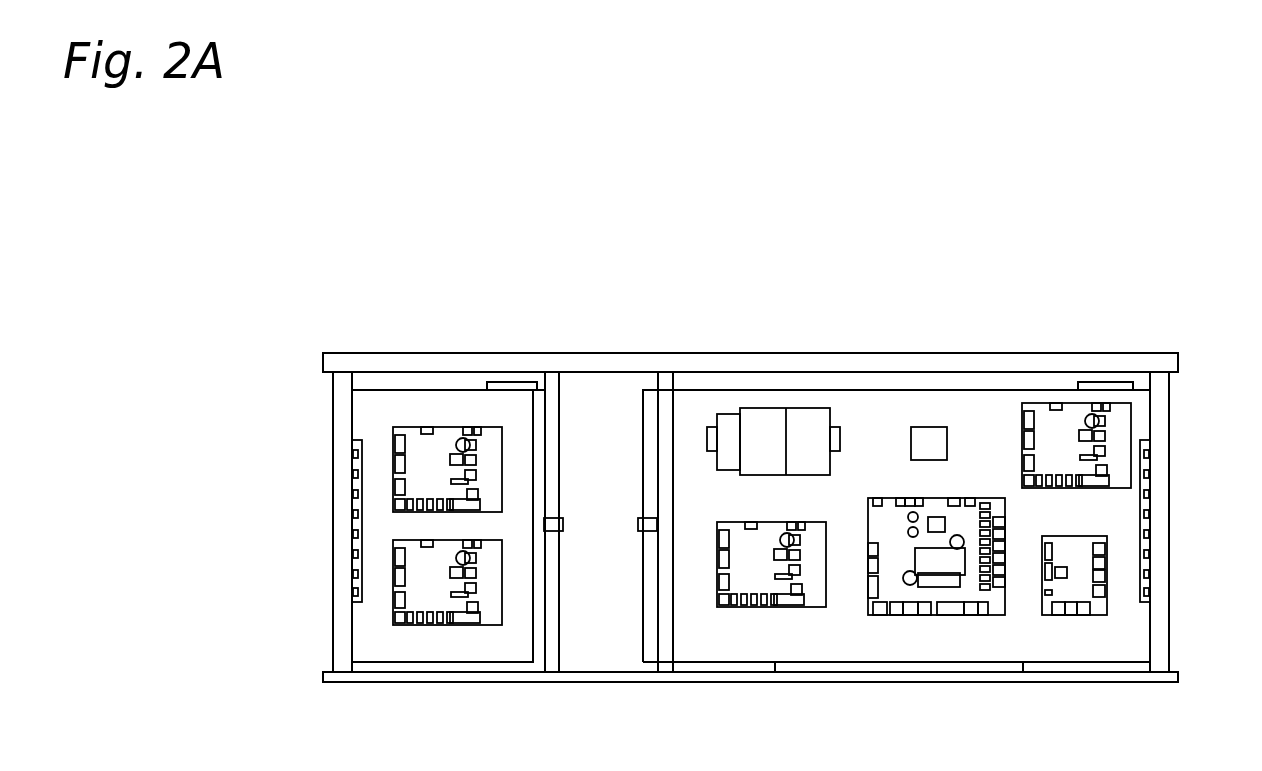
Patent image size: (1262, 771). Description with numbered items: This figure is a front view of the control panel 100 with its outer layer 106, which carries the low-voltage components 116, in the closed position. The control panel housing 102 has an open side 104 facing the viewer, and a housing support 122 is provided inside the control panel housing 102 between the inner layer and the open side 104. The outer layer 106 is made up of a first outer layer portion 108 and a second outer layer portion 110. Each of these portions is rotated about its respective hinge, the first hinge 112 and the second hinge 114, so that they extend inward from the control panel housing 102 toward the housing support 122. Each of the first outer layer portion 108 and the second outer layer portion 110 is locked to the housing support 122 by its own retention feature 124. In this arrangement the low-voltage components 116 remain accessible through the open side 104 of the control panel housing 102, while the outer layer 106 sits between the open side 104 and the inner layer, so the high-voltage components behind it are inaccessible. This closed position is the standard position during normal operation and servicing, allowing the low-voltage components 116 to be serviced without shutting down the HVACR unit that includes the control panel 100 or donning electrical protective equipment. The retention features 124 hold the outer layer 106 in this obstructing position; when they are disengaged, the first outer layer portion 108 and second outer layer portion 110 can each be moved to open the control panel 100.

The control panel 100 is at (1076, 225).
The control panel housing 102 is at (940, 352).
The open side 104 is at (1069, 703).
The outer layer 106 is at (751, 450).
The first outer layer portion 108 is at (440, 403).
The second outer layer portion 110 is at (705, 403).
The first hinge 112 is at (355, 443).
The second hinge 114 is at (1146, 440).
The low-voltage components 116 is at (427, 488).
The housing support 122 is at (618, 650).
The retention features 124 is at (646, 533).